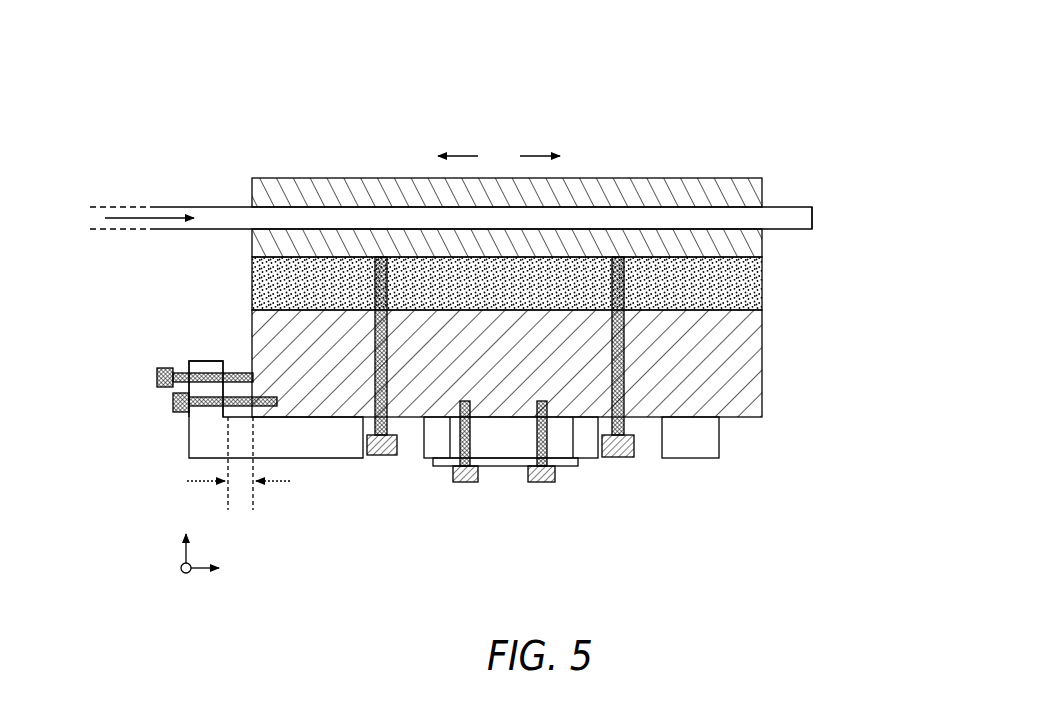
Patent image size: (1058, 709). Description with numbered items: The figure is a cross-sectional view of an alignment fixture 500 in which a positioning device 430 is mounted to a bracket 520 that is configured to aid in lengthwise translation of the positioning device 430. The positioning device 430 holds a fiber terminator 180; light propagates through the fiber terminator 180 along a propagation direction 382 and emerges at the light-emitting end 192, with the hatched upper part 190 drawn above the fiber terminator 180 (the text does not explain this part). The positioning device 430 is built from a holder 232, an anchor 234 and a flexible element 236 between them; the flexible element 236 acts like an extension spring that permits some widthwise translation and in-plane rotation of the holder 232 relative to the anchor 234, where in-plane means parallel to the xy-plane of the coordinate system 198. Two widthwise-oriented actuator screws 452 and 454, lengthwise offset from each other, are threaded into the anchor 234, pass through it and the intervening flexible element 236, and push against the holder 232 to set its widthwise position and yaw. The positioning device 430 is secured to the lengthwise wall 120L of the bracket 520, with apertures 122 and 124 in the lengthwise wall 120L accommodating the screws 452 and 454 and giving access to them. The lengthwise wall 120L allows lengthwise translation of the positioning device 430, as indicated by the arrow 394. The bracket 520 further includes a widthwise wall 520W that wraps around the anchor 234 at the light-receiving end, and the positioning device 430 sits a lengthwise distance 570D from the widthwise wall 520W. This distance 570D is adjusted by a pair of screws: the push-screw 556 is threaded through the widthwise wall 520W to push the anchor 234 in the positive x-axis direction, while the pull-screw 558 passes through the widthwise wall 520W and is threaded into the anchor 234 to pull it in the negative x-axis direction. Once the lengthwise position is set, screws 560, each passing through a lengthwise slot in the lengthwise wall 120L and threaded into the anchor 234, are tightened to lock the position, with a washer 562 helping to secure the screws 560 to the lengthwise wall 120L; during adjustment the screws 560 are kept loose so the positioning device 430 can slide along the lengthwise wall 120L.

The alignment fixture 500 is at (141, 70).
The positioning device 430 is at (882, 382).
The top cladding block 190 is at (203, 186).
The fiber terminator 180 is at (218, 232).
The light-emitting end 192 is at (814, 188).
The propagation direction 382 is at (143, 224).
The arrow indicating lengthwise translation 394 is at (499, 158).
The holder 232 is at (762, 242).
The flexible element 236 is at (762, 292).
The anchor 234 is at (762, 373).
The actuator screw 452 is at (380, 457).
The actuator screw 454 is at (618, 458).
The bracket 520 is at (160, 445).
The widthwise wall 520W is at (215, 361).
The push-screw 556 is at (155, 378).
The pull-screw 558 is at (172, 400).
The lengthwise distance 570D is at (263, 481).
The aperture 122 is at (412, 450).
The washer 562 is at (563, 467).
The screw 560 is at (540, 483).
The aperture 124 is at (652, 450).
The lengthwise wall 120L is at (719, 438).
The coordinate system 198 is at (188, 587).